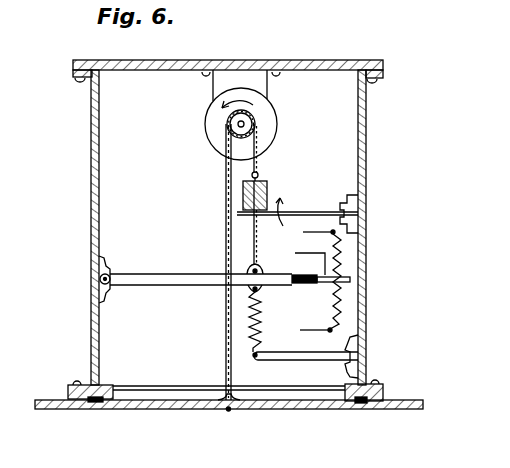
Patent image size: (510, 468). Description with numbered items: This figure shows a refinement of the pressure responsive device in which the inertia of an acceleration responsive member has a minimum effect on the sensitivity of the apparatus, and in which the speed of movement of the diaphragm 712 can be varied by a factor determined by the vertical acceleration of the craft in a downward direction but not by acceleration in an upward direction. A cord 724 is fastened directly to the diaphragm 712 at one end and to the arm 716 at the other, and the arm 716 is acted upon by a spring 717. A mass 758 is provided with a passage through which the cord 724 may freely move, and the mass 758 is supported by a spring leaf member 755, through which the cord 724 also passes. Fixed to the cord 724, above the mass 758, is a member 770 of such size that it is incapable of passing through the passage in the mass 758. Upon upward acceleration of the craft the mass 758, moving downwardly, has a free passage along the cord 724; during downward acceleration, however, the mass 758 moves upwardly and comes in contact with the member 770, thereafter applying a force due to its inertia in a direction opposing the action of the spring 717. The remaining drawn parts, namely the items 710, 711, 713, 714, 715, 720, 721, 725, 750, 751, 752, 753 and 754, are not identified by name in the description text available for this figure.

The base plate 710 is at (393, 411).
The left mounting block 711 is at (128, 410).
The diaphragm 712 is at (167, 410).
The right mounting block 713 is at (383, 392).
The pulley 714 is at (277, 124).
The pivot bracket 715 is at (101, 257).
The arm 716 is at (176, 274).
The spring 717 is at (262, 313).
The solenoid 720 is at (333, 283).
The resistor 721 is at (342, 262).
The cord 724 is at (226, 218).
The pulley hub 725 is at (230, 125).
The left wall 750 is at (91, 150).
The right wall 751 is at (367, 103).
The top plate 752 is at (319, 61).
The conduit tube 753 is at (308, 357).
The wall clamp 754 is at (367, 170).
The spring leaf member 755 is at (316, 211).
The mass 758 is at (268, 189).
The member 770 is at (258, 173).